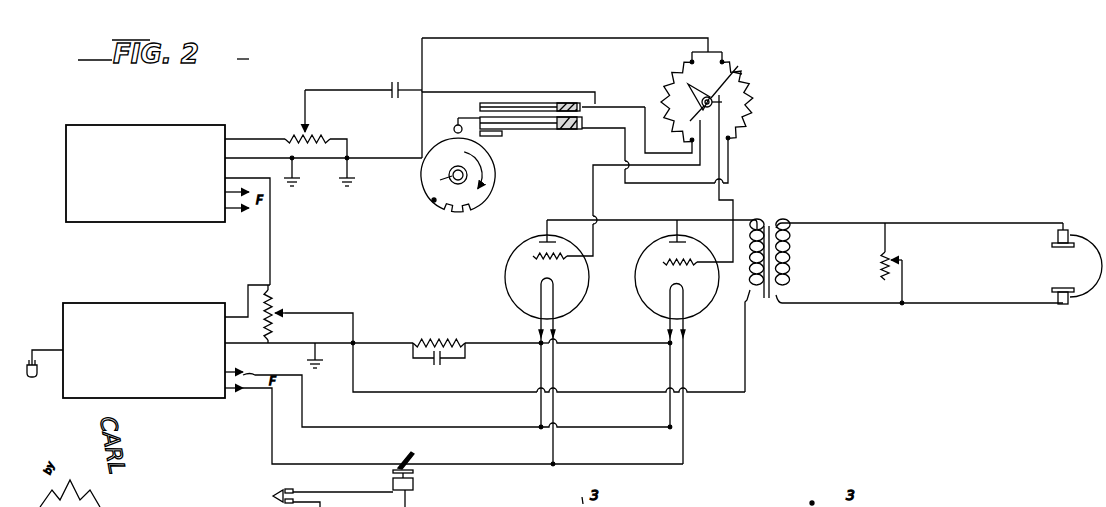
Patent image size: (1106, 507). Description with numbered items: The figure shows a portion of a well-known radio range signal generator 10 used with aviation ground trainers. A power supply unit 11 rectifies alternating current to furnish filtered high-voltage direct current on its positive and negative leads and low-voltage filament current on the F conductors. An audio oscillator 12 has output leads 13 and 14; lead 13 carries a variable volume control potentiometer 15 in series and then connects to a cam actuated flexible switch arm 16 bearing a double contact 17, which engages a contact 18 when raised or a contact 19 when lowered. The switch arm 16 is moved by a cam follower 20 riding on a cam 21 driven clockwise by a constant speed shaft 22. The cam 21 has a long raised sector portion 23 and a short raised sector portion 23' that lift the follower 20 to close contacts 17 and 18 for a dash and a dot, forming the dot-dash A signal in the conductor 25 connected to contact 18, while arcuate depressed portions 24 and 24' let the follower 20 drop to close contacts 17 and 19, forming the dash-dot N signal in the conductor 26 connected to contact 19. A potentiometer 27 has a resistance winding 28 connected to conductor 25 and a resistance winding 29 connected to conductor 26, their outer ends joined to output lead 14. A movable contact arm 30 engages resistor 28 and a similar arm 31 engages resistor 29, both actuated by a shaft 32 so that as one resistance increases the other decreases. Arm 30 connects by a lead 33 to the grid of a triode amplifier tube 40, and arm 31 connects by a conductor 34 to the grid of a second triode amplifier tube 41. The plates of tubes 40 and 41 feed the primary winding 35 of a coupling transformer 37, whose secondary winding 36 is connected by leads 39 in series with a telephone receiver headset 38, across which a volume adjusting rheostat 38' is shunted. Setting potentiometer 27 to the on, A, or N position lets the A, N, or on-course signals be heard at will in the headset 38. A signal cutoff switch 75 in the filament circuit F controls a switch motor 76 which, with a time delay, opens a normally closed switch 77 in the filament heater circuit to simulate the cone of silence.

The signal generator 10 is at (388, 235).
The power supply unit 11 is at (125, 398).
The audio oscillator 12 is at (120, 222).
The output lead 13 is at (250, 147).
The output lead 14 is at (241, 158).
The variable volume control potentiometer 15 is at (312, 131).
The cam actuated flexible switch arm 16 is at (562, 119).
The double contact 17 is at (457, 112).
The contact 18 is at (478, 106).
The contact 19 is at (492, 131).
The cam follower 20 is at (454, 129).
The cam 21 is at (488, 193).
The constant speed shaft 22 is at (440, 180).
The raised sector portion 23 is at (507, 176).
The short raised sector portion 23' is at (435, 217).
The arcuate depressed portion 24 is at (402, 174).
The arcuate depressed portion 24' is at (470, 227).
The conductor 25 is at (620, 104).
The conductor 26 is at (594, 142).
The potentiometer 27 is at (758, 116).
The resistance winding 28 is at (676, 66).
The resistance winding 29 is at (752, 86).
The movable contact arm 30 is at (693, 116).
The contact arm 31 is at (742, 66).
The shaft 32 is at (732, 157).
The lead 33 is at (597, 202).
The conductor 34 is at (742, 206).
The primary winding 35 is at (749, 284).
The secondary winding 36 is at (788, 267).
The coupling transformer 37 is at (764, 341).
The telephone receiver headset 38 is at (1077, 273).
The volume adjusting rheostat 38' is at (914, 264).
The leads 39 is at (838, 223).
The triode amplifier tube 40 is at (584, 310).
The triode amplifier tube 41 is at (710, 310).
The signal cutoff switch 75 is at (321, 498).
The switch motor 76 is at (414, 486).
The switch 77 is at (407, 455).